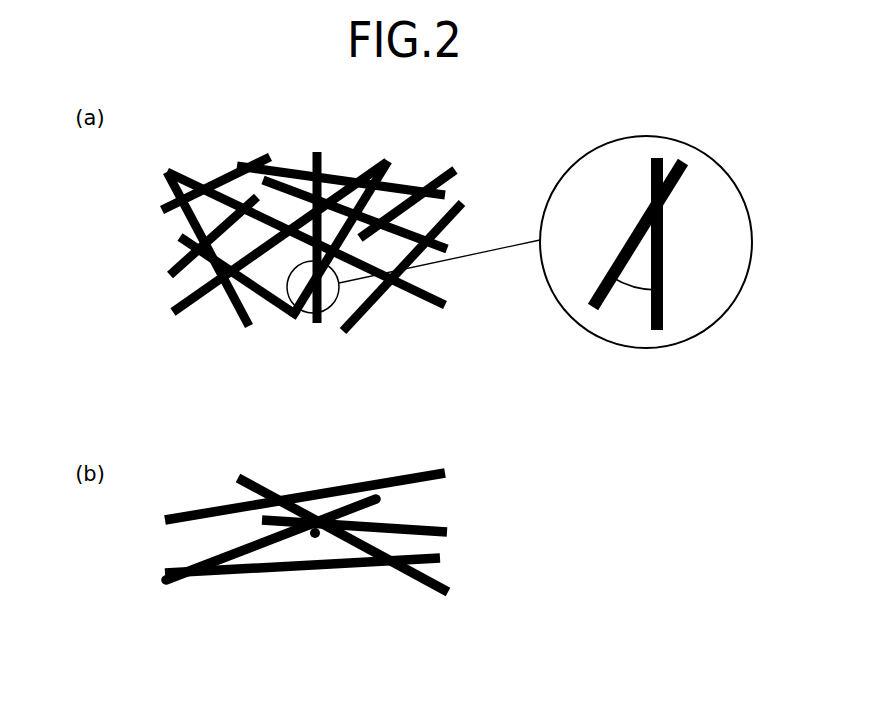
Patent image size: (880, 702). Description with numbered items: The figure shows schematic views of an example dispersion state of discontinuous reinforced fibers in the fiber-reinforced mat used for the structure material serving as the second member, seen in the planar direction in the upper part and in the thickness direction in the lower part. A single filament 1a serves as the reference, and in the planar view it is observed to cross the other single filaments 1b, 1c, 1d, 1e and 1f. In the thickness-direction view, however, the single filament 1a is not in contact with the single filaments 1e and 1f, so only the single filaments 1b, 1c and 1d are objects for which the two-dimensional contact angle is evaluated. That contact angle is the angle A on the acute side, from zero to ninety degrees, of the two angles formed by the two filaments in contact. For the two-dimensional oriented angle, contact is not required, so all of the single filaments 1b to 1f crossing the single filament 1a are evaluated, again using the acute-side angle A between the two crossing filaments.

The single filament 1a is at (318, 323).
The single filament 1b is at (292, 317).
The single filament 1c is at (338, 177).
The single filament 1d is at (298, 185).
The single filament 1e is at (446, 305).
The single filament 1f is at (200, 303).
The angle A is at (634, 302).